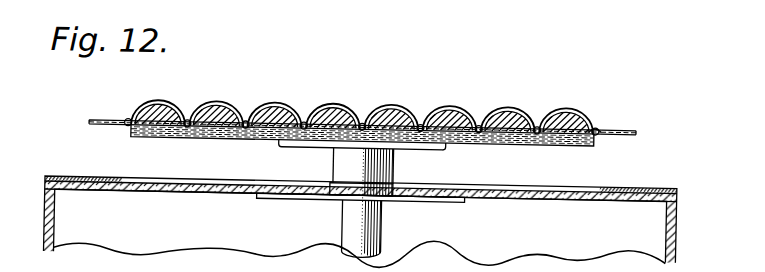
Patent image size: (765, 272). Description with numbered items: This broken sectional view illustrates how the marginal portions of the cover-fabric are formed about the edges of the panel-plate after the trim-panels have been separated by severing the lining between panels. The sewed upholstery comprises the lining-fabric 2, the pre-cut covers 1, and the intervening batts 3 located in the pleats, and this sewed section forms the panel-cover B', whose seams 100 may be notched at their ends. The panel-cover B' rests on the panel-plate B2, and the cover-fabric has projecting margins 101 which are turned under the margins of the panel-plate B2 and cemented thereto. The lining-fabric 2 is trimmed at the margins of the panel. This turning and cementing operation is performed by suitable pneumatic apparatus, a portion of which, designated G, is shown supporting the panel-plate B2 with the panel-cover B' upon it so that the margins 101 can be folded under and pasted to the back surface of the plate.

The seams 100 is at (302, 105).
The pre-cut covers 1 is at (363, 103).
The lining-fabric 2 is at (617, 127).
The batts 3 is at (594, 119).
The projecting margins 101 is at (633, 120).
The panel-cover B' is at (363, 97).
The panel-plate B2 is at (503, 133).
The pneumatic apparatus G is at (360, 224).